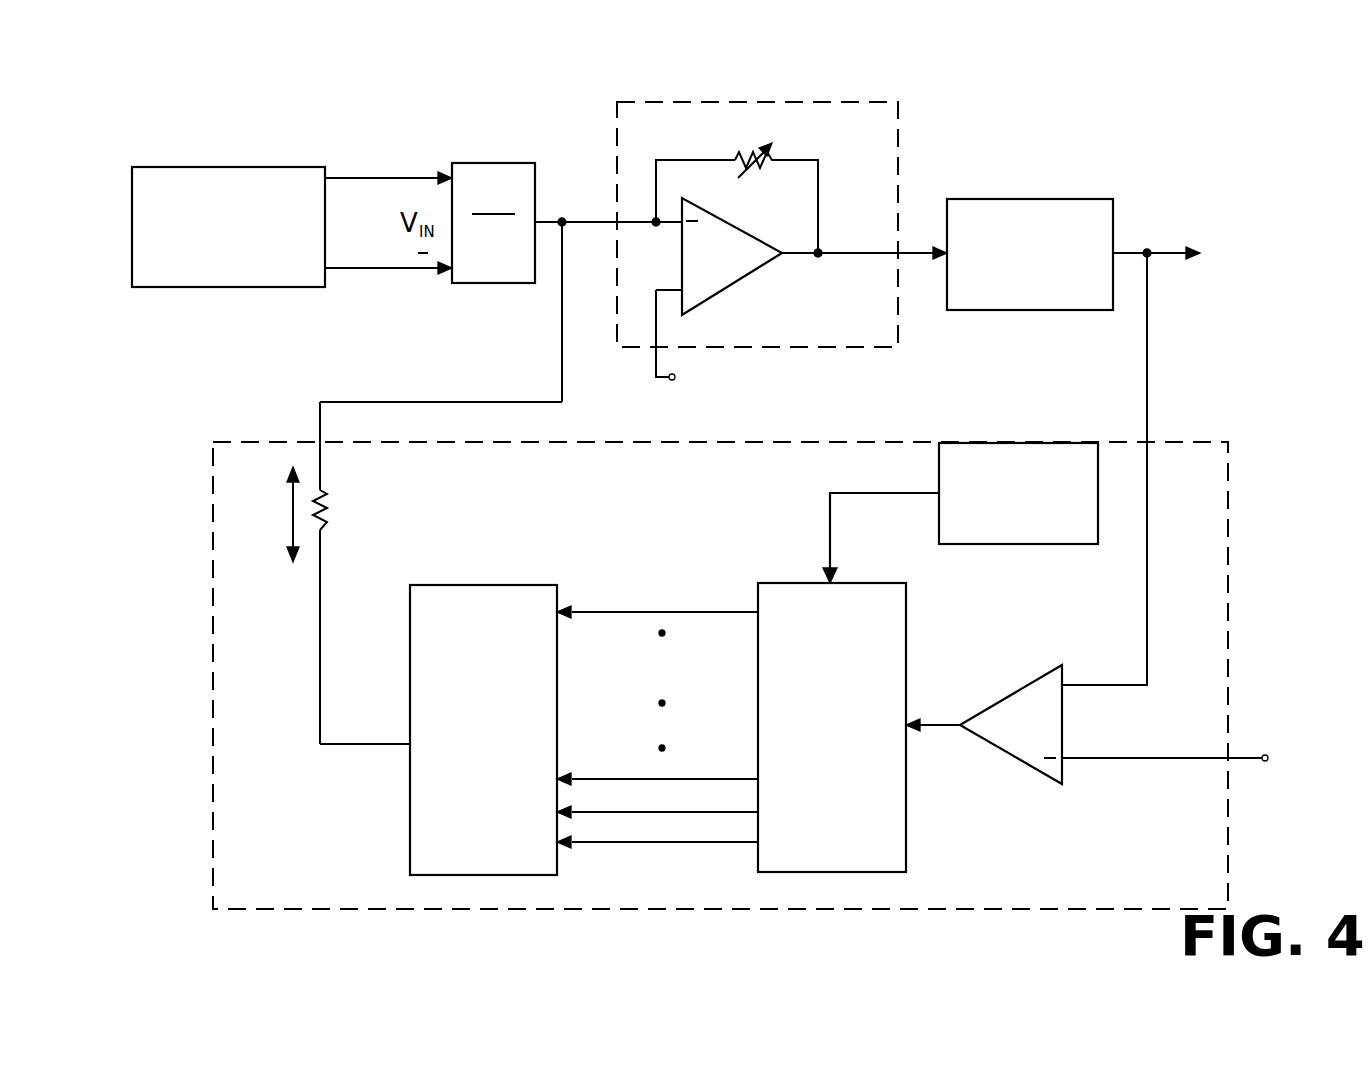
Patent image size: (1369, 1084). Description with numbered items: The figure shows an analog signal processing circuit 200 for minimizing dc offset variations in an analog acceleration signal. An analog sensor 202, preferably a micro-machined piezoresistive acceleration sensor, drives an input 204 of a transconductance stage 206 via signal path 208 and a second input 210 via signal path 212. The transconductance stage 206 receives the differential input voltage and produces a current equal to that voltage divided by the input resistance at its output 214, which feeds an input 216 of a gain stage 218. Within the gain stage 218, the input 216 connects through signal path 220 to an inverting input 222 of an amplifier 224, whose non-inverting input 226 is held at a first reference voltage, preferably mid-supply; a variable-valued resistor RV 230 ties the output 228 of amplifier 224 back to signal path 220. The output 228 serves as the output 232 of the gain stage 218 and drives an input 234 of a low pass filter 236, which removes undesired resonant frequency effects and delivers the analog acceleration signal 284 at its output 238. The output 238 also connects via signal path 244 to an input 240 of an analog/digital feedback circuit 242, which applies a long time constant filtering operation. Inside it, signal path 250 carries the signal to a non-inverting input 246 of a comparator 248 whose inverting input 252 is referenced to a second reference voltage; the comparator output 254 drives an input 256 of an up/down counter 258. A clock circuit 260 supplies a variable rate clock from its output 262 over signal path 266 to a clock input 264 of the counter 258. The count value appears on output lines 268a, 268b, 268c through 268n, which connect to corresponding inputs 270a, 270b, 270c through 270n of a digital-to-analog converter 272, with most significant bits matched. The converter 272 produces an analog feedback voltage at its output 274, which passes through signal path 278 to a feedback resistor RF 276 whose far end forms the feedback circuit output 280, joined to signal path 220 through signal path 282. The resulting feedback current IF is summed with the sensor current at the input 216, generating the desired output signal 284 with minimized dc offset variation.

The analog signal processing circuit 200 is at (212, 352).
The analog sensor 202 is at (203, 167).
The input of transconductance stage 204 is at (448, 172).
The transconductance stage 206 is at (512, 163).
The signal path 208 is at (363, 178).
The second input of transconductance stage 210 is at (440, 276).
The signal path 212 is at (350, 270).
The output of transconductance stage 214 is at (540, 218).
The input of gain stage 216 is at (622, 222).
The gain stage 218 is at (897, 130).
The signal path 220 is at (570, 240).
The inverting input of amplifier 222 is at (680, 223).
The amplifier 224 is at (748, 230).
The non-inverting input of amplifier 226 is at (678, 300).
The output of amplifier 228 is at (782, 255).
The variable-valued resistor RV 230 is at (776, 157).
The output of gain stage 232 is at (905, 250).
The input of low pass filter 234 is at (947, 260).
The low pass filter 236 is at (1012, 199).
The output of low pass filter 238 is at (1118, 250).
The input of analog/digital feedback circuit 240 is at (1160, 437).
The analog/digital feedback circuit 242 is at (1230, 503).
The signal path 244 is at (1150, 352).
The non-inverting input of comparator 246 is at (1062, 668).
The comparator 248 is at (998, 702).
The signal path 250 is at (1150, 512).
The inverting input of comparator 252 is at (1065, 762).
The output of comparator 254 is at (963, 728).
The input of up/down counter 256 is at (907, 692).
The up/down counter 258 is at (908, 822).
The clock circuit 260 is at (1010, 443).
The output of clock circuit 262 is at (928, 496).
The input of up/down counter 264 is at (826, 576).
The signal path 266 is at (838, 492).
The output line 268a is at (615, 845).
The output line 268b is at (675, 814).
The output line 268c is at (740, 782).
The output line 268n is at (622, 612).
The input of D/A converter 270a is at (556, 846).
The input of D/A converter 270b is at (556, 812).
The input of D/A converter 270c is at (556, 779).
The input of D/A converter 270n is at (560, 620).
The digital-to-analog converter 272 is at (463, 585).
The output of D/A converter 274 is at (407, 752).
The feedback resistor RF 276 is at (326, 505).
The signal path 278 is at (318, 625).
The output of analog/digital feedback circuit 280 is at (318, 440).
The signal path 282 is at (410, 402).
The analog acceleration signal VOUT 284 is at (1175, 258).